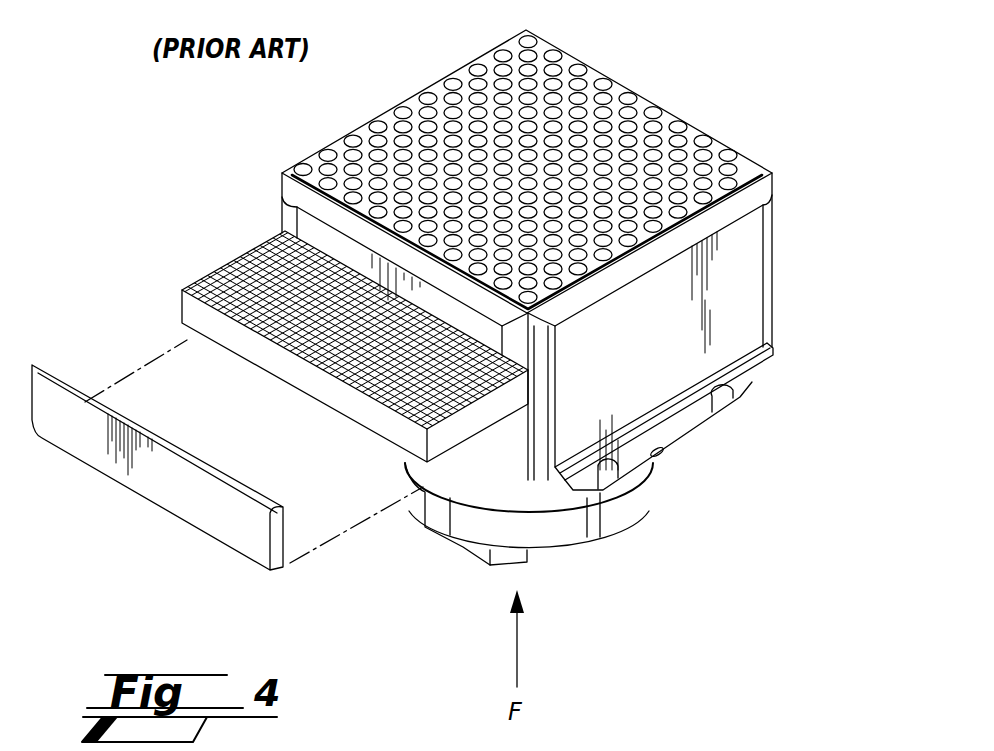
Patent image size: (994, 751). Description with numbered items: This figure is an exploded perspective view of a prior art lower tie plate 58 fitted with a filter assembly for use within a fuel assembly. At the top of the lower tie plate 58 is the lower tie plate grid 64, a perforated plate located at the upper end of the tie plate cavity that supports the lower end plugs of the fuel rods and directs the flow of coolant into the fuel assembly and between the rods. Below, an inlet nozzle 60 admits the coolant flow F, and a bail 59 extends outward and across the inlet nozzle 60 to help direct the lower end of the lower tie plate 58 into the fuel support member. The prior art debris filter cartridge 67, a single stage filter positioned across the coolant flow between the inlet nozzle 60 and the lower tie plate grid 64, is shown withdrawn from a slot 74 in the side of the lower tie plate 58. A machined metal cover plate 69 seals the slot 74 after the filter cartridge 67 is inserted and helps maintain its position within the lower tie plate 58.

The lower tie plate 58 is at (733, 487).
The bail 59 is at (465, 560).
The inlet nozzle 60 is at (537, 578).
The lower tie plate grid 64 is at (668, 125).
The debris filter cartridge 67 is at (242, 262).
The cover plate 69 is at (212, 513).
The slot 74 is at (352, 262).